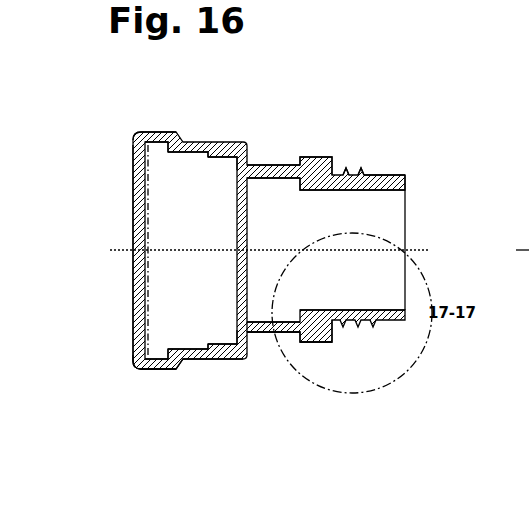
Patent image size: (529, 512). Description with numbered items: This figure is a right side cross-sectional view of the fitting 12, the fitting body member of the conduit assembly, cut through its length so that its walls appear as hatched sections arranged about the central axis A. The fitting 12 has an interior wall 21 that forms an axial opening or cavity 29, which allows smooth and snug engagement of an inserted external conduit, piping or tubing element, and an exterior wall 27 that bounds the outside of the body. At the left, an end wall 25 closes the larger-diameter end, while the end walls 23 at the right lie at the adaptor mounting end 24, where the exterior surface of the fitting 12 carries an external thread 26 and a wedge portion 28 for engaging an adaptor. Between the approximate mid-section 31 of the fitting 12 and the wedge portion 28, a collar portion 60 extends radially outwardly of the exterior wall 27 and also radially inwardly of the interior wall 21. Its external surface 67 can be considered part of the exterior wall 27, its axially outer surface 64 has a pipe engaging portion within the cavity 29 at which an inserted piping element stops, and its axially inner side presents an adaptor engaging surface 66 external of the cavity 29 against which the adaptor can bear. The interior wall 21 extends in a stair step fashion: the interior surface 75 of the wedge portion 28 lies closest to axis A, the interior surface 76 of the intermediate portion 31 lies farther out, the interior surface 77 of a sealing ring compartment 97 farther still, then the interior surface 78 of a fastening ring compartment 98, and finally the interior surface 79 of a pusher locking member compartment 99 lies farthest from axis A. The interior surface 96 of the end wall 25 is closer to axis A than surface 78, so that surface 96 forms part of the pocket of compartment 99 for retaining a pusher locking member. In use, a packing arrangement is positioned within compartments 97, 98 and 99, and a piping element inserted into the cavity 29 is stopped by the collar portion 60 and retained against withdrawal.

The fitting 12 is at (185, 396).
The axis A is at (88, 250).
The cavity 29 is at (88, 191).
The end wall 25 is at (131, 141).
The interior surface of the end wall 96 is at (140, 347).
The pusher locking member compartment 99 is at (153, 159).
The fastening ring compartment 98 is at (187, 170).
The sealing ring compartment 97 is at (220, 178).
The interior surface of the pusher locking member compartment 79 is at (157, 353).
The interior surface of the fastening ring compartment 78 is at (190, 344).
The interior surface of the sealing ring compartment 77 is at (220, 342).
The exterior wall 27 is at (268, 165).
The interior wall 21 is at (246, 319).
The interior surface of the intermediate portion 76 is at (268, 321).
The mid-section 31 is at (270, 339).
The external surface of the collar portion 67 is at (312, 146).
The collar portion 60 is at (313, 163).
The adaptor engaging surface 66 is at (337, 160).
The external thread 26 is at (347, 163).
The adaptor mounting end 24 is at (405, 167).
The end wall 23 is at (408, 181).
The wedge portion 28 is at (392, 183).
The interior surface of the wedge portion 75 is at (367, 308).
The axially outer surface 64 is at (328, 330).